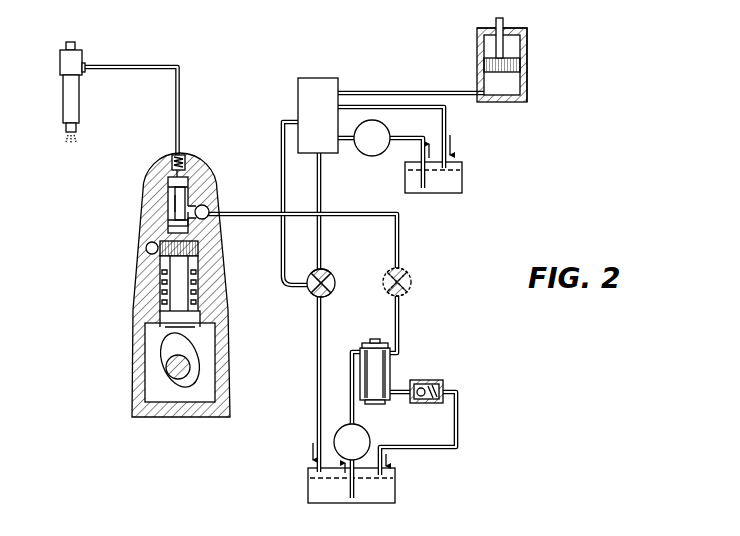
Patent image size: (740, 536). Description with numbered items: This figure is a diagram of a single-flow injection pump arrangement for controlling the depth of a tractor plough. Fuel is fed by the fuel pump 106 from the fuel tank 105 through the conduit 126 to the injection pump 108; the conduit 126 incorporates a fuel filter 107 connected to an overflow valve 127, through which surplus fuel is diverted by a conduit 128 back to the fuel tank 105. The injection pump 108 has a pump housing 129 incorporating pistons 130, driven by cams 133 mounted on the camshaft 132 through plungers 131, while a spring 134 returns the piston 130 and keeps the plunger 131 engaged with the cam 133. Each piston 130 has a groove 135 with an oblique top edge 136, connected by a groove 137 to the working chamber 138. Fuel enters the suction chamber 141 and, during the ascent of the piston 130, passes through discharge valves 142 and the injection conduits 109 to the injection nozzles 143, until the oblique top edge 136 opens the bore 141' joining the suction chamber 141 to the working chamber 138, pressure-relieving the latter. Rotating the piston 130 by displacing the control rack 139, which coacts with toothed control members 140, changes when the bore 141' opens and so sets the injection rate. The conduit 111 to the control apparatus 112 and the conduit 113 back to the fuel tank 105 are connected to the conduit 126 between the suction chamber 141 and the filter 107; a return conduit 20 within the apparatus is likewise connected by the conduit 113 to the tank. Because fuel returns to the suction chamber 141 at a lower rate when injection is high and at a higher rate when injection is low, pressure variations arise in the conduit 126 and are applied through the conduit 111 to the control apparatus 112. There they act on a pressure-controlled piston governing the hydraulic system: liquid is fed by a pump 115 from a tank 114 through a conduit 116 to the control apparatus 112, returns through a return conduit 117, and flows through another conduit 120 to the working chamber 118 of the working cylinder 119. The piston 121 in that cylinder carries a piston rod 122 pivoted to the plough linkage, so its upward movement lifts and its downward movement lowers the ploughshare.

The return conduit 20 is at (293, 288).
The fuel tank 105 is at (395, 494).
The fuel pump 106 is at (371, 438).
The fuel filter 107 is at (384, 368).
The injection pump 108 is at (164, 303).
The injection conduits 109 is at (181, 94).
The conduit 111 is at (316, 186).
The control apparatus 112 is at (330, 133).
The conduit 113 is at (316, 408).
The tank 114 is at (463, 183).
The pump 115 is at (372, 158).
The conduit 116 is at (344, 147).
The return conduit 117 is at (446, 120).
The working chamber 118 is at (529, 54).
The working cylinder 119 is at (527, 42).
The conduit 120 is at (418, 90).
The piston 121 is at (521, 65).
The piston rod 122 is at (504, 22).
The conduit 126 is at (399, 242).
The overflow valve 127 is at (441, 380).
The conduit 128 is at (457, 422).
The pump housing 129 is at (140, 295).
The pistons 130 is at (192, 198).
The plungers 131 is at (172, 312).
The camshaft 132 is at (178, 367).
The cams 133 is at (178, 347).
The spring 134 is at (163, 283).
The groove 135 is at (180, 225).
The oblique top edge 136 is at (186, 220).
The groove 137 is at (175, 200).
The working chamber 138 is at (168, 183).
The control rack 139 is at (148, 248).
The toothed control members 140 is at (198, 250).
The suction chamber 141 is at (229, 220).
The bore 141' is at (228, 205).
The discharge valves 142 is at (172, 163).
The injection nozzles 143 is at (66, 102).